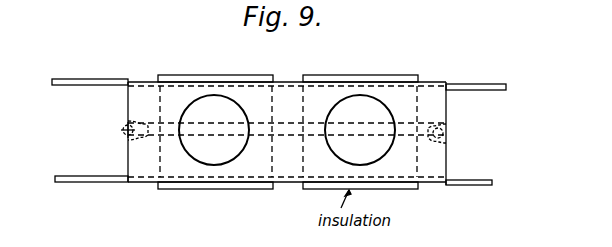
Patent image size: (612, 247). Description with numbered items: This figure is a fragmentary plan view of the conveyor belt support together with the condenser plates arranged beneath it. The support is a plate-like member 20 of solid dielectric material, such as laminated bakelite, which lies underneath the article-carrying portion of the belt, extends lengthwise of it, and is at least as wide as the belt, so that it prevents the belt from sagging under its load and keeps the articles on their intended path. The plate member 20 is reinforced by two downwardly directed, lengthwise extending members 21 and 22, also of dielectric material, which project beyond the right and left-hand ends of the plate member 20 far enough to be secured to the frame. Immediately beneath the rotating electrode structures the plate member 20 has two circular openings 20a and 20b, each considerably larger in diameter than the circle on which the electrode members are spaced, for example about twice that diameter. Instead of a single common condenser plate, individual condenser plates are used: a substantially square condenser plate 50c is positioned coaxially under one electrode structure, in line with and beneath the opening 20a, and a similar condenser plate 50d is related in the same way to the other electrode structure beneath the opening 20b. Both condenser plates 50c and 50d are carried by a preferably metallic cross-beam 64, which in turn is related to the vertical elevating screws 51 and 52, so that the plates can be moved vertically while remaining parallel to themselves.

The plate-like member 20 is at (283, 85).
The circular opening 20a is at (200, 156).
The circular opening 20b is at (388, 152).
The lengthwise extending member 21 is at (93, 183).
The lengthwise extending member 22 is at (96, 62).
The condenser plate 50c is at (243, 59).
The condenser plate 50d is at (392, 58).
The elevating screw 51 is at (122, 129).
The elevating screw 52 is at (449, 134).
The cross-beam 64 is at (297, 138).